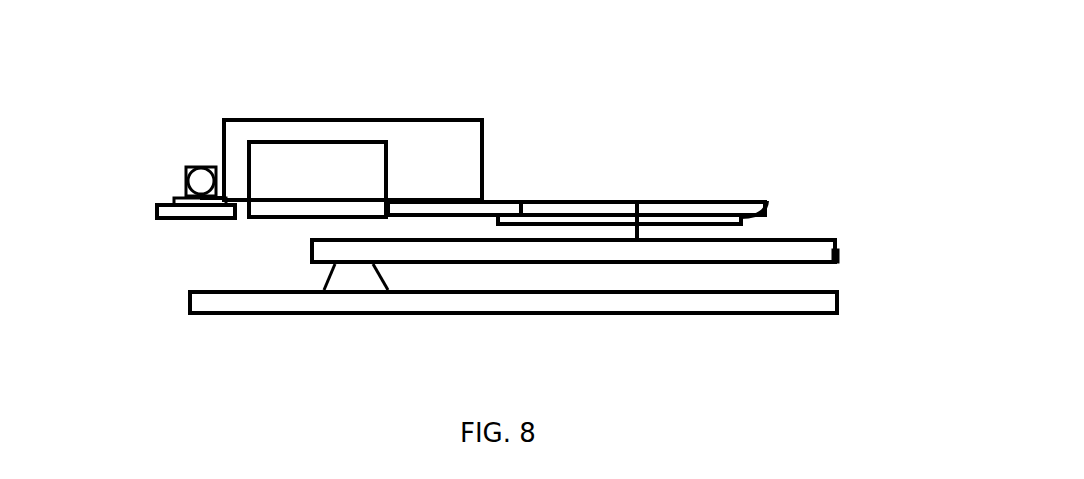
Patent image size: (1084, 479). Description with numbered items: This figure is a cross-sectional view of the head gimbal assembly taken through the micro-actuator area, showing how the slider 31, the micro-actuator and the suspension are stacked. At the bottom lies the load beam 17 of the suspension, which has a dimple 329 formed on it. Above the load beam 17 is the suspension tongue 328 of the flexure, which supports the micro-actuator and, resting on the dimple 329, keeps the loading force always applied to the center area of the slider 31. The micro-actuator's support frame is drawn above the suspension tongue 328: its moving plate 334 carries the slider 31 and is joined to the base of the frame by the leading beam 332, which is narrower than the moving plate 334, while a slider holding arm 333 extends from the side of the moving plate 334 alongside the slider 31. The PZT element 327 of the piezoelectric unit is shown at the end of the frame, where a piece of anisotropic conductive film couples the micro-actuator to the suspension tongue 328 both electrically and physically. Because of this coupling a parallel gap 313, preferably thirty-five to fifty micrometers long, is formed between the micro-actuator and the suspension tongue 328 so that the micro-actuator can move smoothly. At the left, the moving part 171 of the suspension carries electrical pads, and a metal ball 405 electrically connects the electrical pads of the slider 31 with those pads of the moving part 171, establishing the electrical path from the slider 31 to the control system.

The load beam 17 is at (272, 303).
The slider 31 is at (445, 135).
The moving part 171 is at (167, 208).
The parallel gap 313 is at (320, 230).
The PZT element 327 is at (750, 218).
The suspension tongue 328 is at (817, 255).
The dimple 329 is at (368, 282).
The leading beam 332 is at (693, 207).
The slider holding arm 333 is at (295, 160).
The moving plate 334 is at (512, 192).
The metal ball 405 is at (197, 182).